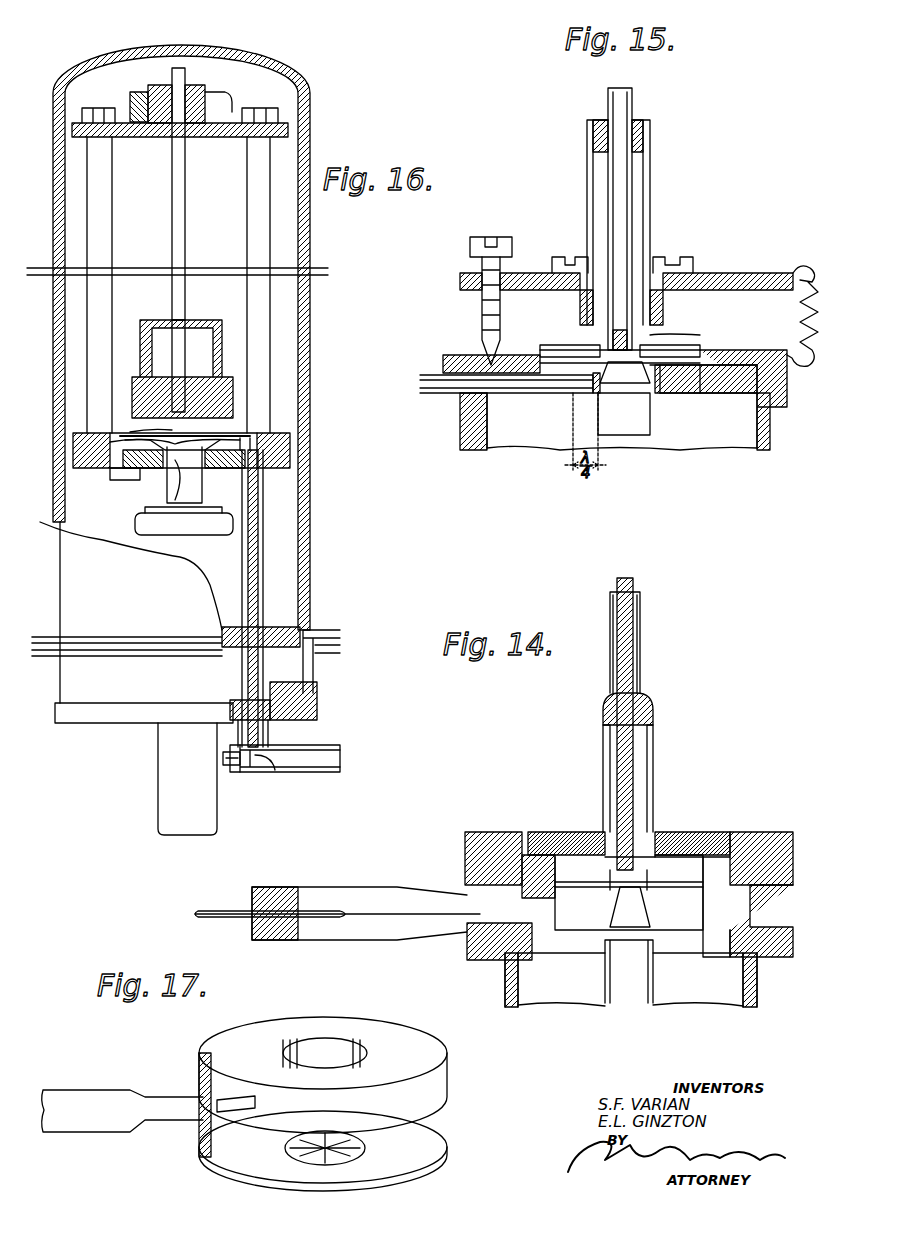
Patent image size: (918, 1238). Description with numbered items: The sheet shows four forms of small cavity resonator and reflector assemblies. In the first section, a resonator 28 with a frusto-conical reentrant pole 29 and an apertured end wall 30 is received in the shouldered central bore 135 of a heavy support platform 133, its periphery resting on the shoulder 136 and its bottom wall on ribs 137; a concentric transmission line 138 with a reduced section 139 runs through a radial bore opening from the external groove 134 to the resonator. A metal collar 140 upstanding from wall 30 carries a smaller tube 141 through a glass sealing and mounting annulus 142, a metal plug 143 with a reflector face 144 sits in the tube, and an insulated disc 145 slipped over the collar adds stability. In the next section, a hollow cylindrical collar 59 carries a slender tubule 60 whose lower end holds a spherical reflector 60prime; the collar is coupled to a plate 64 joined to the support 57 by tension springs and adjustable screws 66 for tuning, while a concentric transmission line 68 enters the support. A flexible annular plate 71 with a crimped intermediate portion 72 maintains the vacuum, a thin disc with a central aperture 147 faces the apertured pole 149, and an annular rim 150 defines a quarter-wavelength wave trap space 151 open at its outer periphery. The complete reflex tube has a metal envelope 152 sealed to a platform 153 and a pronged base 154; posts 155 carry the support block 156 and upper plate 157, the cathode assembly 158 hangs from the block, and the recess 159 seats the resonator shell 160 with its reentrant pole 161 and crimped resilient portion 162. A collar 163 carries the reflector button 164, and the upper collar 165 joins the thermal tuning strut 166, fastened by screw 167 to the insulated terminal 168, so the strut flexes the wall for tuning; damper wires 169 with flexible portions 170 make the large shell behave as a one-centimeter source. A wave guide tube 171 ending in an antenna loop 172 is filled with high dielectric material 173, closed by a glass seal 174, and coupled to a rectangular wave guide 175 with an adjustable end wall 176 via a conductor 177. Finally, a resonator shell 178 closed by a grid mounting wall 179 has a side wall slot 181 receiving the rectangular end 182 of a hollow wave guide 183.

In FIG. 16, the metal envelope 152 is at (312, 294).
In FIG. 16, the platform 153 is at (285, 627).
In FIG. 16, the pronged base 154 is at (108, 720).
In FIG. 16, the elongated posts 155 is at (112, 200).
In FIG. 16, the resonator support block 156 is at (290, 450).
In FIG. 16, the upper plate 157 is at (290, 123).
In FIG. 16, the cathode assembly 158 is at (150, 530).
In FIG. 15, the cathode assembly 158 is at (725, 393).
In FIG. 16, the enlarged recess 159 is at (110, 472).
In FIG. 16, the cylindrical resonator shell 160 is at (245, 440).
In FIG. 16, the apertured reentrant pole 161 is at (198, 480).
In FIG. 16, the annularly crimped resilient portion 162 is at (235, 436).
In FIG. 16, the collar 163 is at (130, 432).
In FIG. 16, the reflector button 164 is at (160, 320).
In FIG. 16, the upper collar 165 is at (204, 320).
In FIG. 16, the expansible thermal tuning strut 166 is at (186, 228).
In FIG. 16, the screw 167 is at (142, 92).
In FIG. 16, the insulated terminal 168 is at (196, 85).
In FIG. 16, the damper wires 169 is at (120, 444).
In FIG. 16, the intermediate flexible portion 170 is at (225, 430).
In FIG. 16, the wave guide tube 171 is at (263, 500).
In FIG. 16, the antenna loop 172 is at (262, 436).
In FIG. 16, the high dielectric constant material 173 is at (258, 540).
In FIG. 16, the glass seal 174 is at (270, 730).
In FIG. 16, the hollow rectangular wave guide 175 is at (324, 772).
In FIG. 16, the adjustable end wall 176 is at (238, 772).
In FIG. 16, the conductor 177 is at (276, 772).
In FIG. 15, the tubule 60 is at (632, 100).
In FIG. 15, the reflector 60prime is at (625, 315).
In FIG. 15, the hollow cylindrical collar 59 is at (650, 184).
In FIG. 15, the plate 64 is at (772, 273).
In FIG. 15, the adjustable screws 66 is at (508, 240).
In FIG. 15, the support 57 is at (780, 395).
In FIG. 15, the concentric transmission line 68 is at (436, 395).
In FIG. 15, the central aperture 147 is at (600, 355).
In FIG. 15, the annularly crimped intermediate portion 72 is at (680, 348).
In FIG. 15, the annular plate 71 is at (705, 350).
In FIG. 15, the annular space 151 is at (705, 335).
In FIG. 15, the apertured pole 149 is at (635, 400).
In FIG. 15, the insulated disc 145 is at (658, 393).
In FIG. 14, the insulated disc 145 is at (690, 832).
In FIG. 15, the annular rim 150 is at (700, 393).
In FIG. 14, the tube 141 is at (640, 648).
In FIG. 14, the sealing and mounting annulus 142 is at (653, 700).
In FIG. 14, the metal collar 140 is at (603, 752).
In FIG. 14, the reduced section 139 is at (522, 832).
In FIG. 14, the end wall 30 is at (590, 832).
In FIG. 14, the support platform 133 is at (780, 832).
In FIG. 14, the external groove 134 is at (775, 892).
In FIG. 14, the central bore 135 is at (735, 832).
In FIG. 14, the resonator 28 is at (700, 832).
In FIG. 14, the metal plug 143 is at (650, 810).
In FIG. 14, the reflector face 144 is at (665, 832).
In FIG. 14, the frusto-conical reentrant pole 29 is at (648, 910).
In FIG. 14, the concentric transmission line 138 is at (403, 885).
In FIG. 14, the shoulder 136 is at (710, 935).
In FIG. 14, the ribs 137 is at (670, 935).
In FIG. 17, the cylindrical resonator shell 178 is at (447, 1100).
In FIG. 17, the grid mounting wall 179 is at (420, 1162).
In FIG. 17, the side wall slot 181 is at (210, 1160).
In FIG. 17, the rectangular end 182 is at (176, 1122).
In FIG. 17, the hollow wave guide 183 is at (100, 1095).